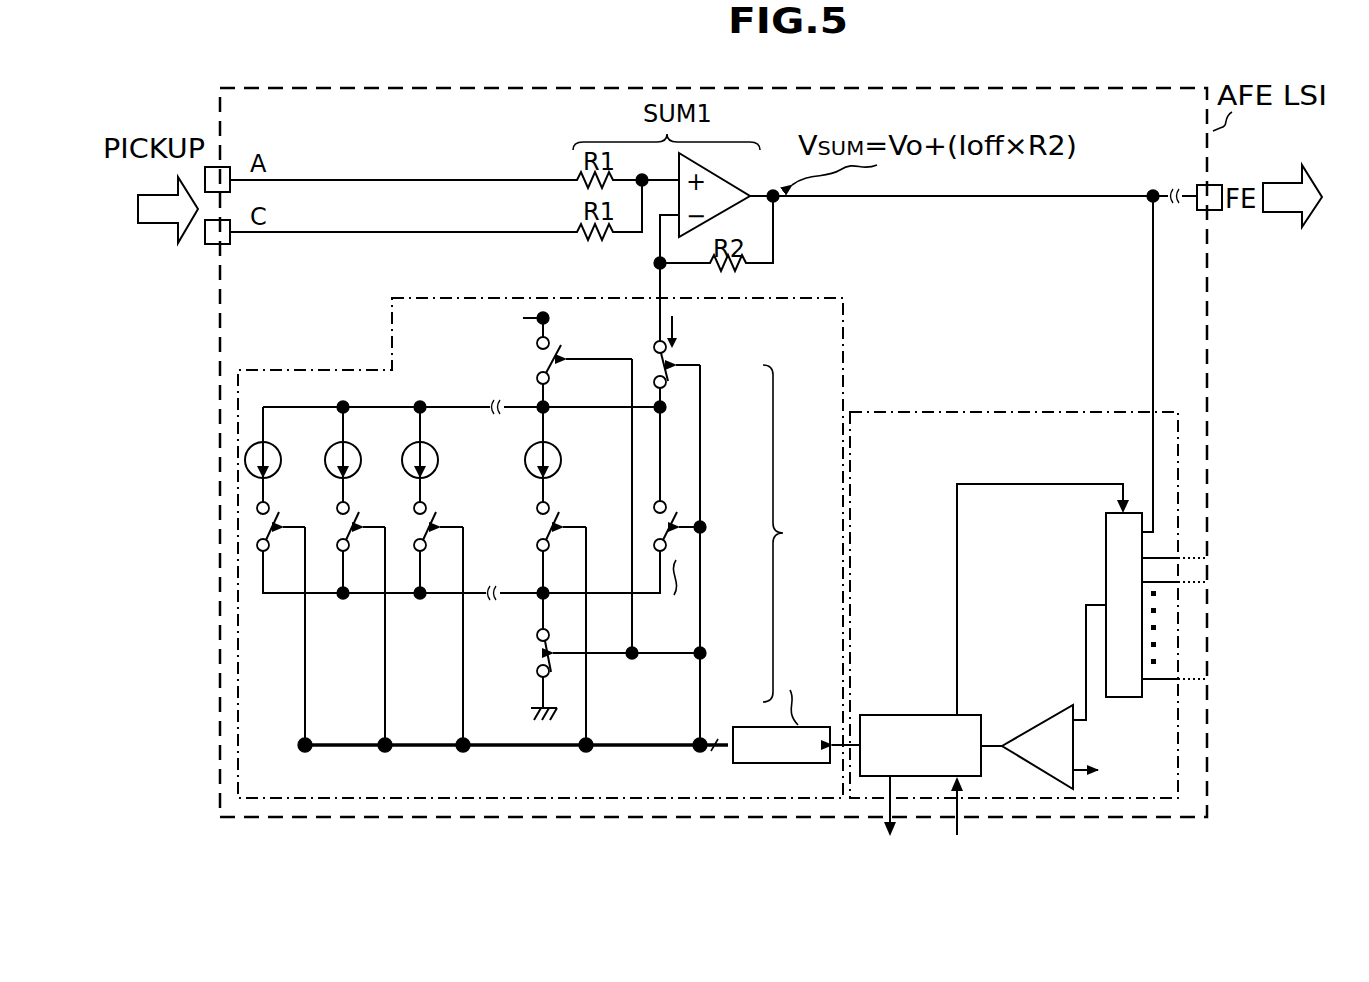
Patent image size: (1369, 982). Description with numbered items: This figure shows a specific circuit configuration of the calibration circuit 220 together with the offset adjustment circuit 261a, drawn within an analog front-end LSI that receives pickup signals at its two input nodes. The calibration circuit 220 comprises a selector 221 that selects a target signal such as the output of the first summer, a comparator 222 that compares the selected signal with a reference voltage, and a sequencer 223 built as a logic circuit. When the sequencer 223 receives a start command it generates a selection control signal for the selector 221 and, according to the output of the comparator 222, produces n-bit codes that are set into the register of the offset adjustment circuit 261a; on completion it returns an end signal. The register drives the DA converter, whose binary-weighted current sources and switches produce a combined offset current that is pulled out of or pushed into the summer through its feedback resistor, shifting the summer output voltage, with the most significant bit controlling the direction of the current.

The offset adjustment circuit 261a is at (843, 333).
The calibration circuit 220 is at (1058, 410).
The selector 221 is at (1106, 548).
The comparator 222 is at (1025, 730).
The sequencer 223 is at (918, 712).